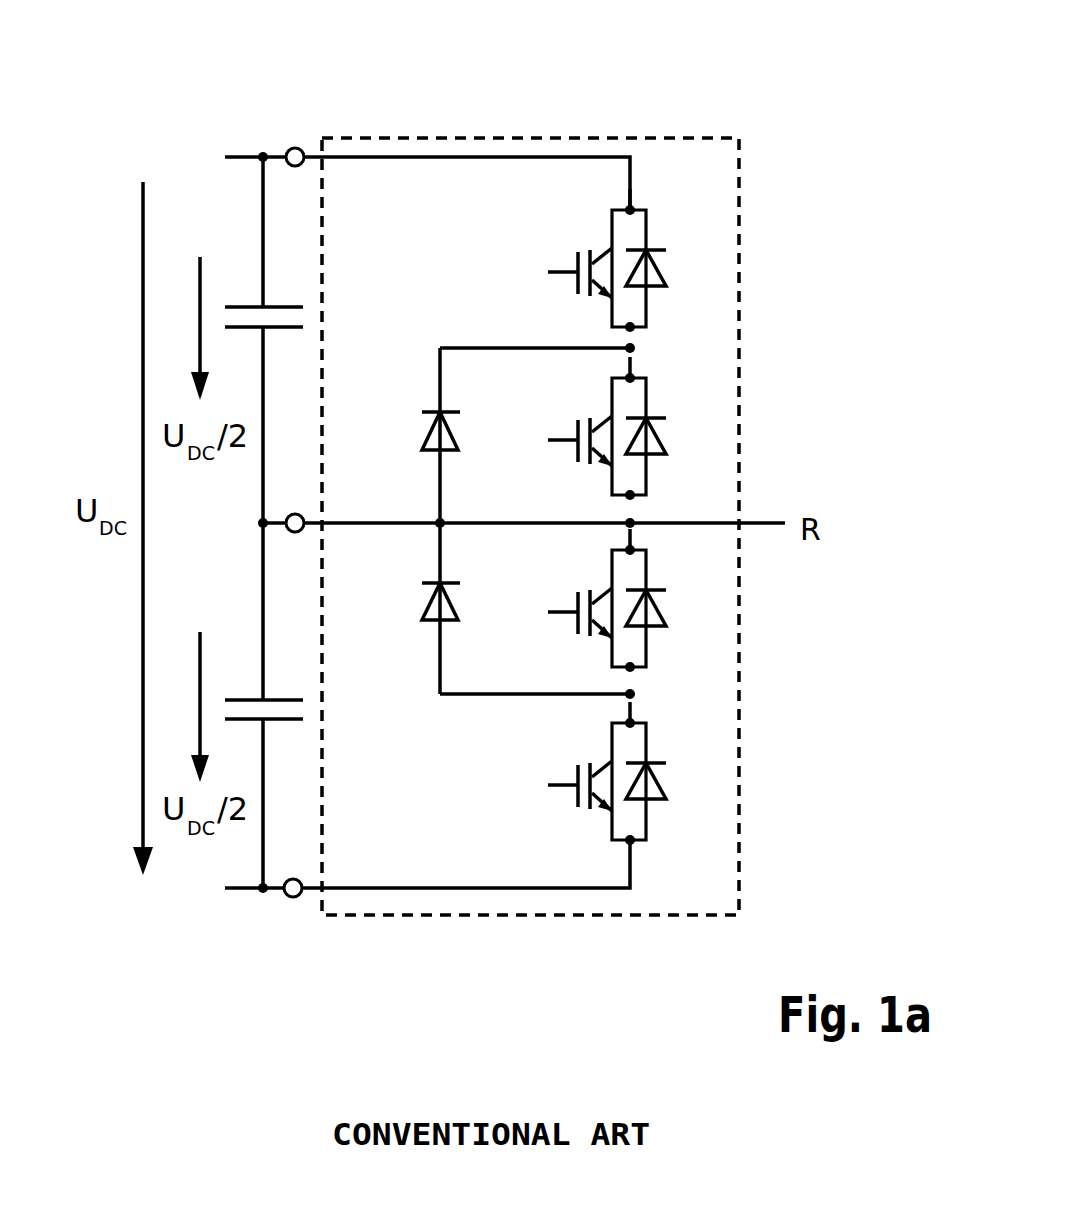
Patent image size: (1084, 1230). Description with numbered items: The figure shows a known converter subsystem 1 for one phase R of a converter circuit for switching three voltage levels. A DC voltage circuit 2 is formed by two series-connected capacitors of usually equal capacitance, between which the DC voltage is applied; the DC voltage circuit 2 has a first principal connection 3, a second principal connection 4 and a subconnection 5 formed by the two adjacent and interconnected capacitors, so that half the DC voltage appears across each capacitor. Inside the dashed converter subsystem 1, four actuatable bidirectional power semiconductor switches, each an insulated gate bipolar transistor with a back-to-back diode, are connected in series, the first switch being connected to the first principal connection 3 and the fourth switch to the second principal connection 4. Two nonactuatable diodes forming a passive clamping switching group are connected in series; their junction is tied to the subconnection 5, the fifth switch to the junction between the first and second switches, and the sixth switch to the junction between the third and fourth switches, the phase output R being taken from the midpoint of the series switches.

The converter subsystem 1 is at (378, 138).
The DC voltage circuit 2 is at (229, 243).
The first principal connection 3 is at (292, 148).
The second principal connection 4 is at (297, 896).
The subconnection 5 is at (298, 531).